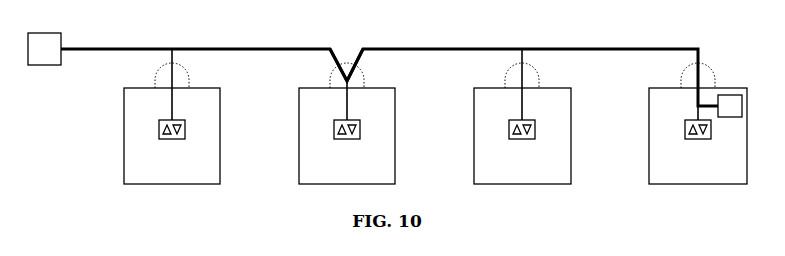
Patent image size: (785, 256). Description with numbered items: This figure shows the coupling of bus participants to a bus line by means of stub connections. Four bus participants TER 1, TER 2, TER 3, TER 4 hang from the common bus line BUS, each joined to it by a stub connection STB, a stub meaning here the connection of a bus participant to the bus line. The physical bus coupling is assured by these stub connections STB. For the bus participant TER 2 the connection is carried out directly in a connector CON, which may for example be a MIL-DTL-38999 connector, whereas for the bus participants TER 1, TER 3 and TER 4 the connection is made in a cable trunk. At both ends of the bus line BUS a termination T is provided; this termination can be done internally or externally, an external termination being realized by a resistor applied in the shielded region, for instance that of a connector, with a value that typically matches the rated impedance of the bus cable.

The bus line BUS is at (478, 44).
The connector CON is at (343, 51).
The termination T is at (385, 75).
The stub connection STB is at (152, 98).
The bus participant TER 1 is at (172, 123).
The bus participant TER 2 is at (347, 123).
The bus participant TER 3 is at (522, 123).
The bus participant TER 4 is at (698, 123).